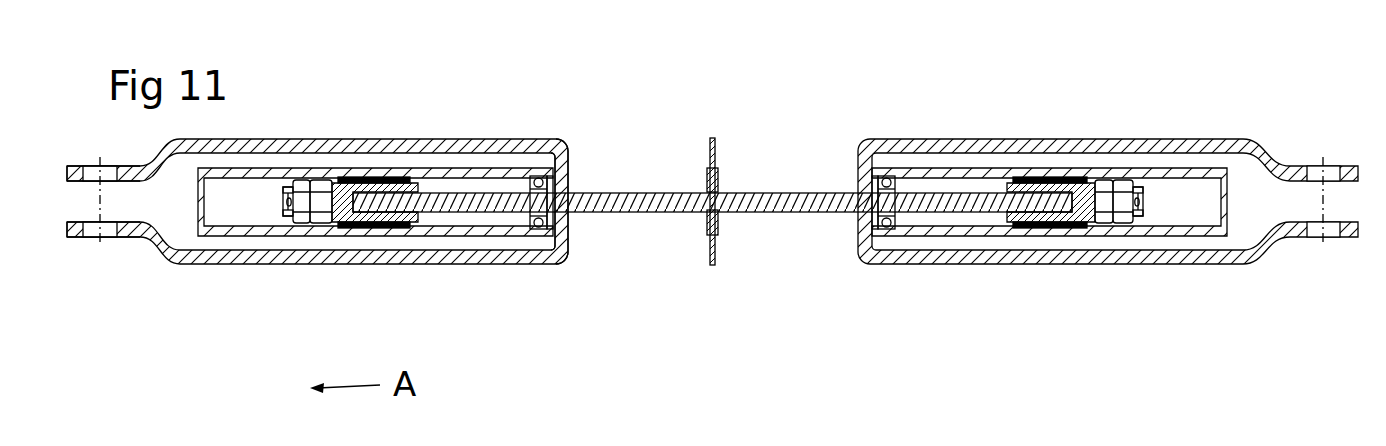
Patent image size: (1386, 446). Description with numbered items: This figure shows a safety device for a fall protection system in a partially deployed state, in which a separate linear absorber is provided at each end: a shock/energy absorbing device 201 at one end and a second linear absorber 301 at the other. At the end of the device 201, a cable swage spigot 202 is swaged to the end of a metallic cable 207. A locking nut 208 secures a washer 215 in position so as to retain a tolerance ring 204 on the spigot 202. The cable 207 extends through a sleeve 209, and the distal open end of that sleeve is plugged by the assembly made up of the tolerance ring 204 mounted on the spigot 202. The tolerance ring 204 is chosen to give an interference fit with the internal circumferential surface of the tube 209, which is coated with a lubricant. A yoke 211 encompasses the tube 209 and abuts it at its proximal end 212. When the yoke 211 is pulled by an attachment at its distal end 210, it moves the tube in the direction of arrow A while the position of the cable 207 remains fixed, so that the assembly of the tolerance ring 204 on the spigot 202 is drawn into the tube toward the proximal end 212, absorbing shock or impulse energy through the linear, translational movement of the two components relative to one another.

The shock/energy absorbing device 201 is at (424, 82).
The cable swage spigot 202 is at (338, 190).
The tolerance ring 204 is at (404, 178).
The metallic cable 207 is at (650, 207).
The locking nut 208 is at (306, 222).
The sleeve 209 is at (258, 170).
The distal end of the yoke 210 is at (105, 247).
The yoke 211 is at (385, 264).
The proximal end of the tube 212 is at (576, 176).
The washer 215 is at (340, 180).
The linear absorber 301 is at (1081, 124).